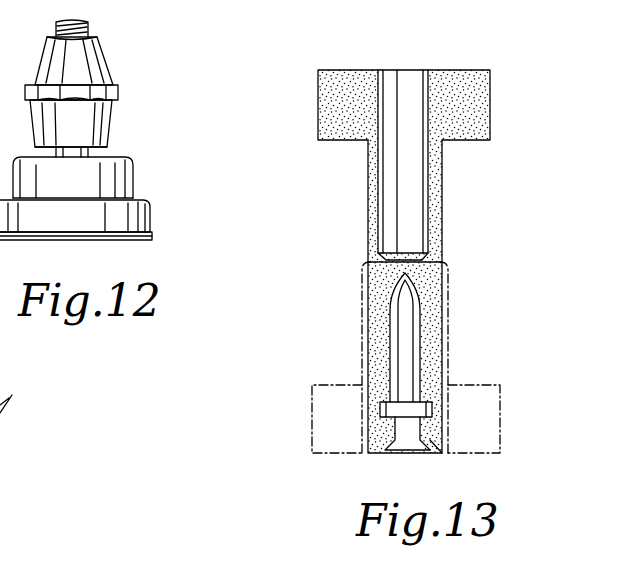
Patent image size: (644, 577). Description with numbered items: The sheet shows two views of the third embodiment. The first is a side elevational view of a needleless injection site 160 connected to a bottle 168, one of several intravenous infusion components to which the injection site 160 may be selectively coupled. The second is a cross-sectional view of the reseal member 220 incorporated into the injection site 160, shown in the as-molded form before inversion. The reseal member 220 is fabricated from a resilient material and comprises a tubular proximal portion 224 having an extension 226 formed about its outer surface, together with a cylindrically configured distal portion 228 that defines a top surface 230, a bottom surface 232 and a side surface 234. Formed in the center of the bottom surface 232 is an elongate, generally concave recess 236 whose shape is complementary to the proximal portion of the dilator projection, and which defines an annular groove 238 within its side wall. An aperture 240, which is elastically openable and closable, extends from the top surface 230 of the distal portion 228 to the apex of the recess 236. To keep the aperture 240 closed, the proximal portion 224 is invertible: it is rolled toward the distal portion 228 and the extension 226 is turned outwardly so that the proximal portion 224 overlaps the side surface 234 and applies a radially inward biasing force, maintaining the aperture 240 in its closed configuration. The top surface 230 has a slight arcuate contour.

In FIG. 12, the needleless injection site 160 is at (140, 75).
In FIG. 12, the bottle 168 is at (145, 214).
In FIG. 13, the reseal member 220 is at (300, 123).
In FIG. 13, the tubular proximal portion 224 is at (473, 305).
In FIG. 13, the extension 226 is at (352, 78).
In FIG. 13, the distal portion 228 is at (446, 358).
In FIG. 13, the top surface 230 is at (378, 252).
In FIG. 13, the bottom surface 232 is at (437, 455).
In FIG. 13, the side surface 234 is at (374, 321).
In FIG. 13, the recess 236 is at (403, 431).
In FIG. 13, the annular groove 238 is at (382, 410).
In FIG. 13, the aperture 240 is at (404, 272).